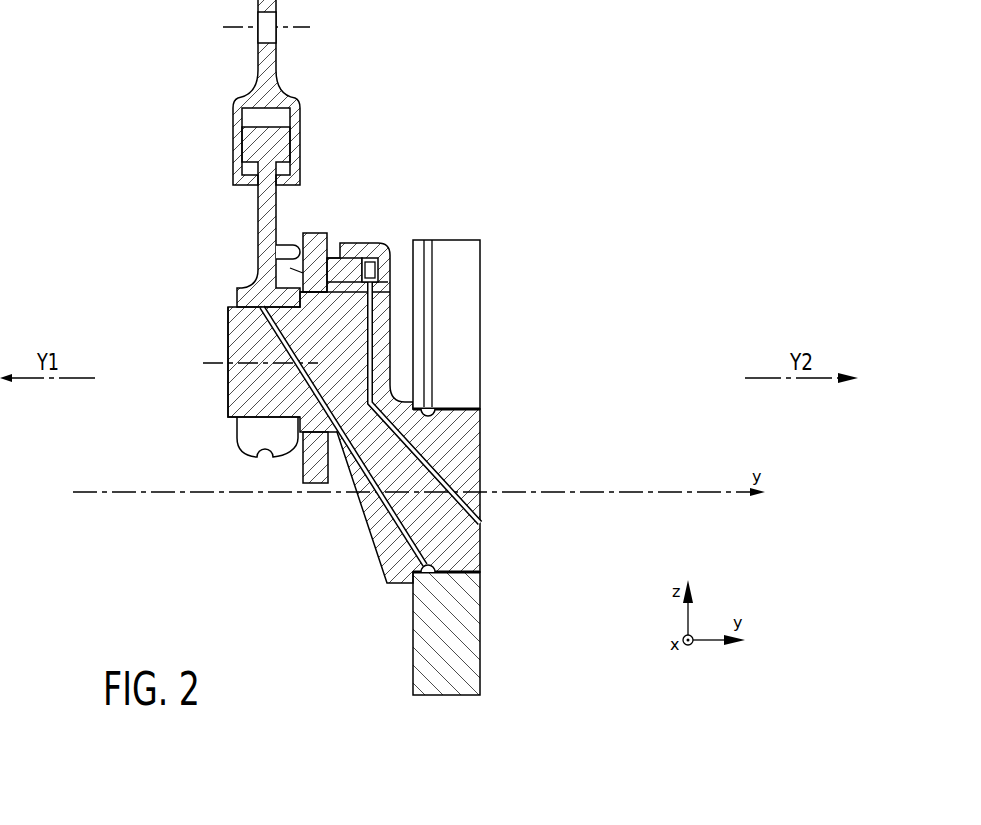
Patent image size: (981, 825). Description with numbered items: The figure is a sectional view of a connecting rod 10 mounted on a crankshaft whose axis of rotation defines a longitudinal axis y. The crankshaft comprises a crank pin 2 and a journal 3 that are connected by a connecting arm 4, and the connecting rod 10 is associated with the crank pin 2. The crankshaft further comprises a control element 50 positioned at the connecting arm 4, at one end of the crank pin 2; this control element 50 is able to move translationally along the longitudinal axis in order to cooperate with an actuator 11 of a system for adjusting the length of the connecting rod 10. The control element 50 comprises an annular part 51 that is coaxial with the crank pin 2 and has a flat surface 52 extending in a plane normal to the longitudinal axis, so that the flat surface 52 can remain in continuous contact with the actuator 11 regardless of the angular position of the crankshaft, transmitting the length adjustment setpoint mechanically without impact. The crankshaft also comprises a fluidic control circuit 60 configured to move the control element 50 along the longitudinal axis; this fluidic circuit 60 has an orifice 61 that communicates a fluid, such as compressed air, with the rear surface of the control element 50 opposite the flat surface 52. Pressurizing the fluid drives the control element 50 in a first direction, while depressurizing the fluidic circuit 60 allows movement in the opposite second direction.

The crank pin 2 is at (243, 345).
The journal 3 is at (452, 540).
The connecting arm 4 is at (348, 485).
The connecting rod 10 is at (270, 213).
The actuator 11 is at (285, 240).
The control element 50 is at (340, 270).
The annular part 51 is at (333, 288).
The flat surface 52 is at (290, 268).
The fluidic control circuit 60 is at (410, 447).
The orifice 61 is at (378, 283).